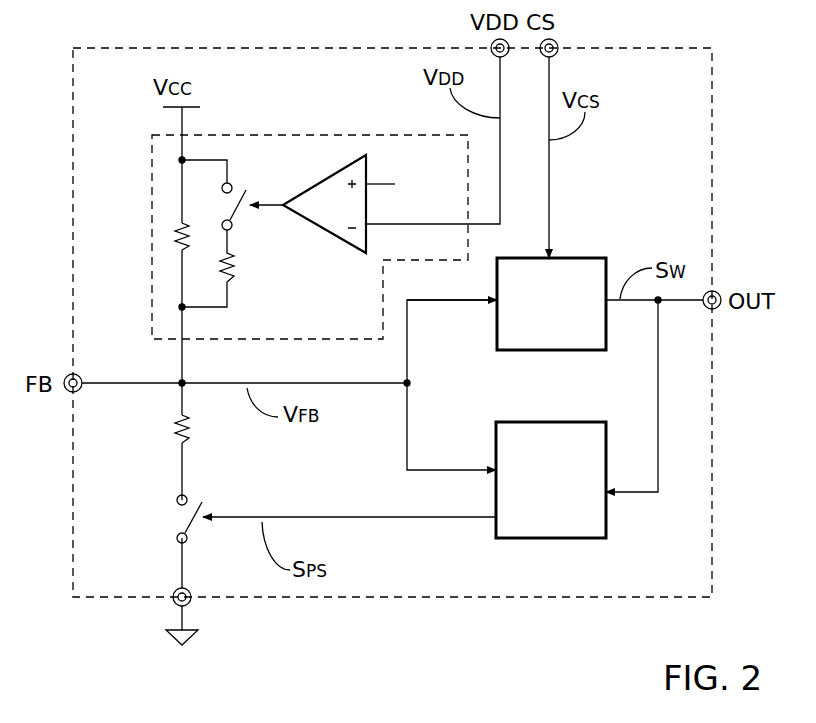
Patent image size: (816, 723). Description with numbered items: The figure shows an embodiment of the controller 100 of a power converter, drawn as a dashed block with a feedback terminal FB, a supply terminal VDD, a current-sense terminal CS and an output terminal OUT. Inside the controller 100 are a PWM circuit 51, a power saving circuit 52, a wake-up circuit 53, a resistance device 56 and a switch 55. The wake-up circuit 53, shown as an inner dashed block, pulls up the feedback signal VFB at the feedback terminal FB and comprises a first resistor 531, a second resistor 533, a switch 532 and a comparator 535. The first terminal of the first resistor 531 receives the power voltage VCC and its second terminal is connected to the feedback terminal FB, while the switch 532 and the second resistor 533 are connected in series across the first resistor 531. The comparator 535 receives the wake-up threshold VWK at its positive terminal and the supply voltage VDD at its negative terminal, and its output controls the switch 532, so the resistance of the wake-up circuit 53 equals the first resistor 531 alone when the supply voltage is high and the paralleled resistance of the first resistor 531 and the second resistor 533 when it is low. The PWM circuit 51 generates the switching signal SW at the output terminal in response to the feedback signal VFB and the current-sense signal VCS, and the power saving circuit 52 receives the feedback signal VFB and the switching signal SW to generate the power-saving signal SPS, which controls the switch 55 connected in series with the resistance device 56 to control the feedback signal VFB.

The controller 100 is at (215, 46).
The wake-up circuit 53 is at (303, 135).
The first resistor 531 is at (168, 240).
The switch 532 is at (232, 182).
The second resistor 533 is at (237, 272).
The comparator 535 is at (328, 232).
The PWM circuit 51 is at (567, 258).
The power saving circuit 52 is at (548, 538).
The switch 55 is at (172, 522).
The resistance device 56 is at (170, 430).